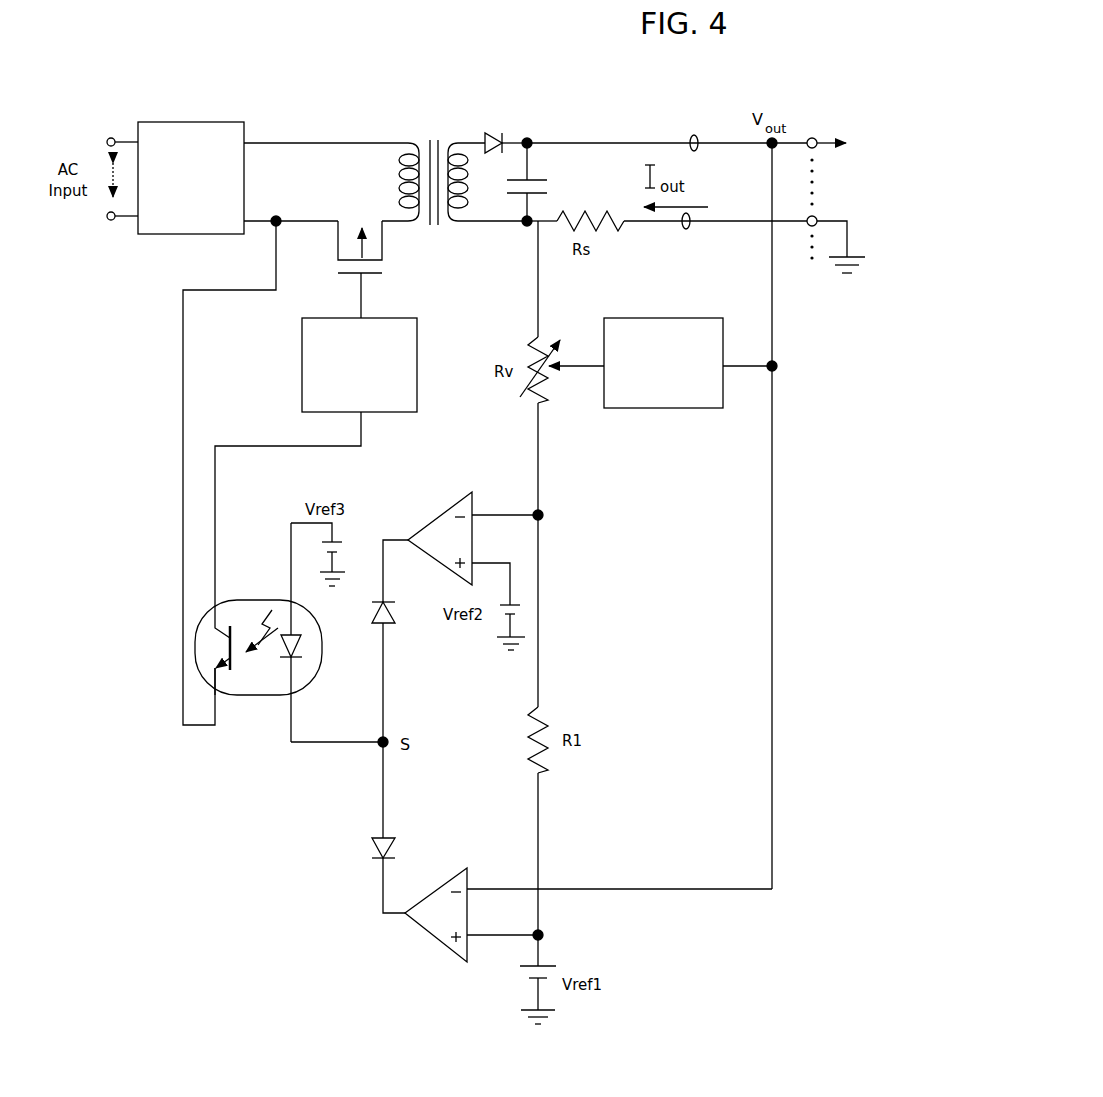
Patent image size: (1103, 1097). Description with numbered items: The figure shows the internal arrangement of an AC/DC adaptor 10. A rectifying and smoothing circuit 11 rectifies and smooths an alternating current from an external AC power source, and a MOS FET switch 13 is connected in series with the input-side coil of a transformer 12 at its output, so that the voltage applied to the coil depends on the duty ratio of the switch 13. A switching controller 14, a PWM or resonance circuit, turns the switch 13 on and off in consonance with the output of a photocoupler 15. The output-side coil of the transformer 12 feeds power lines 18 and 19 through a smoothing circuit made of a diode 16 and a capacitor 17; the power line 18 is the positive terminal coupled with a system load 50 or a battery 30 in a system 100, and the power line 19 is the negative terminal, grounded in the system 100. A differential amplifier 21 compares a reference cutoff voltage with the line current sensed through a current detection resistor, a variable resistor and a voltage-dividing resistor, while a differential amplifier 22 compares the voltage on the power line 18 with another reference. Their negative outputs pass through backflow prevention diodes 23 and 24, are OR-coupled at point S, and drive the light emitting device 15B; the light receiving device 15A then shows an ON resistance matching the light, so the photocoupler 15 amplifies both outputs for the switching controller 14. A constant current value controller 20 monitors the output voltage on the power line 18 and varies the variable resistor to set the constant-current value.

The AC/DC adaptor 10 is at (198, 856).
The rectifying and smoothing circuit 11 is at (168, 120).
The transformer 12 is at (421, 130).
The MOS FET switch 13 is at (400, 235).
The switching controller 14 is at (300, 381).
The photocoupler 15 is at (273, 650).
The light receiving device 15A is at (228, 620).
The light emitting device 15B is at (310, 655).
The diode 16 is at (500, 126).
The capacitor 17 is at (541, 179).
The power line 18 is at (692, 136).
The power line 19 is at (688, 228).
The constant current value controller 20 is at (688, 410).
The differential amplifier 21 is at (436, 517).
The differential amplifier 22 is at (428, 937).
The backflow prevention diode 23 is at (400, 617).
The backflow prevention diode 24 is at (362, 852).
The battery 30 is at (842, 119).
The system load 50 is at (841, 86).
The system 100 is at (839, 294).